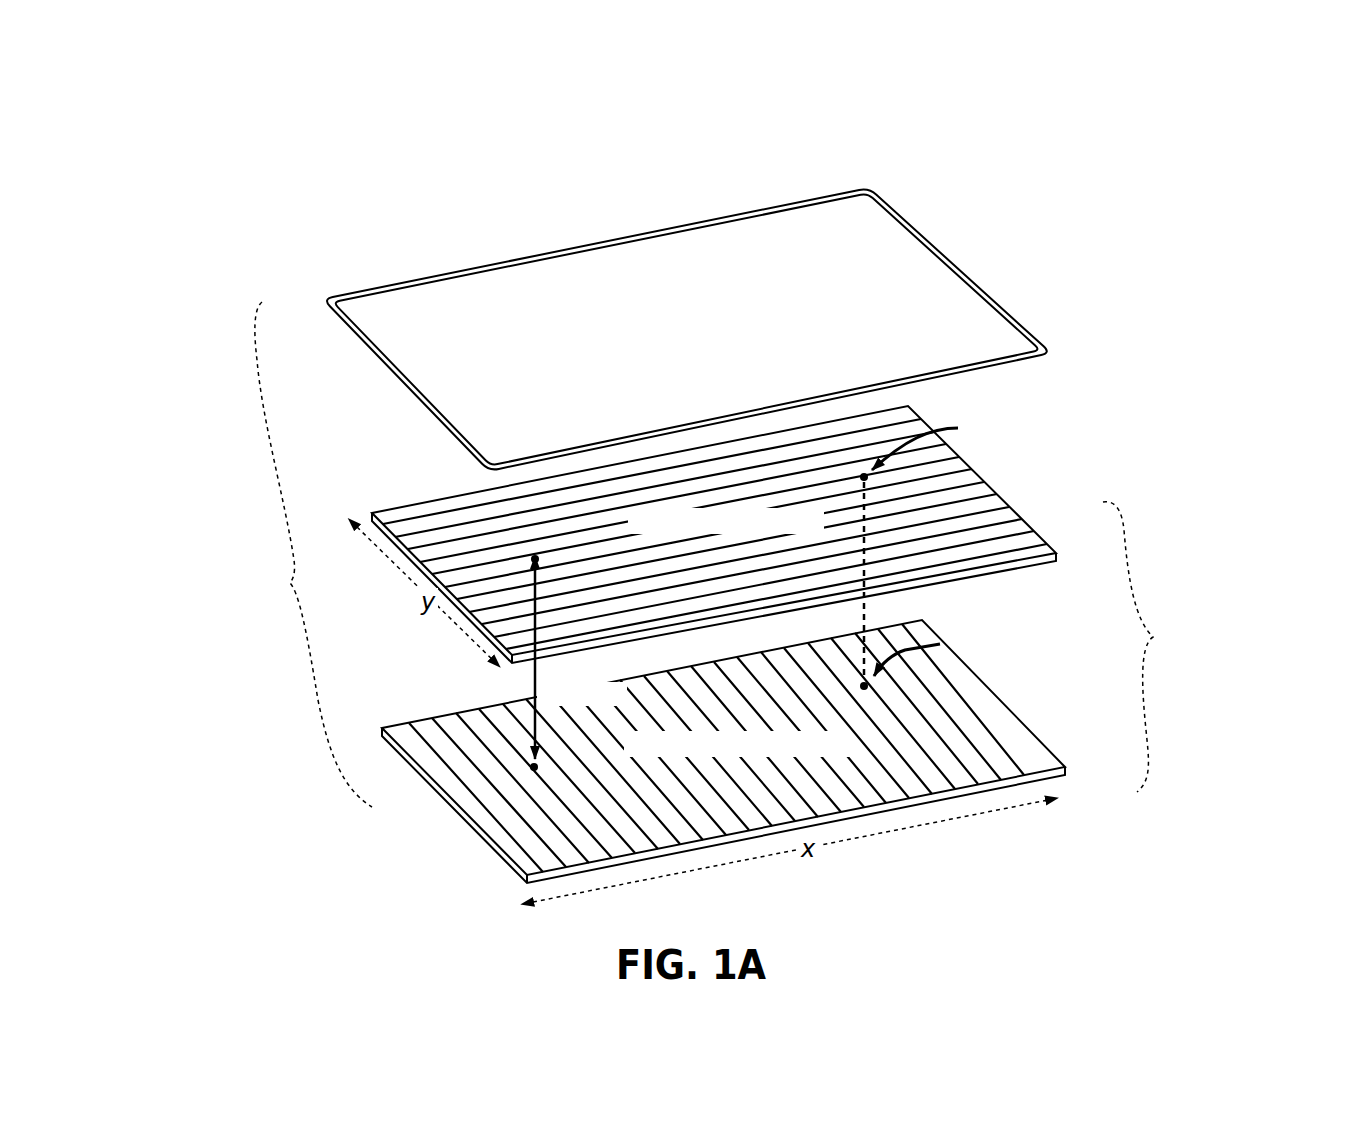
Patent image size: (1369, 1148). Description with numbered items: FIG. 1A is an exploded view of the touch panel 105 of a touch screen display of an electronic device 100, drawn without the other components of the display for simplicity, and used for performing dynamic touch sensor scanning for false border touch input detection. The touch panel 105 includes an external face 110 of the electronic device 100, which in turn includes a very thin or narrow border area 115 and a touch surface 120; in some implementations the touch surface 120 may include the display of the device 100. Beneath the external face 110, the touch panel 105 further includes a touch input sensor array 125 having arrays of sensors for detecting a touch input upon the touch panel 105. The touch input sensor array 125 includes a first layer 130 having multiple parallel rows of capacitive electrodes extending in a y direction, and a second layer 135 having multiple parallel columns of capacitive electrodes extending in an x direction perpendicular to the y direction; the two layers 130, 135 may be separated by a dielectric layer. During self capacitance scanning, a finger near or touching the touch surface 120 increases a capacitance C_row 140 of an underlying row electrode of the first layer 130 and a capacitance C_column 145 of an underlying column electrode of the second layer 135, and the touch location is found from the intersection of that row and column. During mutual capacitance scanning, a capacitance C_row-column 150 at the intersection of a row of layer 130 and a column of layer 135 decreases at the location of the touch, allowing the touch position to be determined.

The electronic device 100 is at (148, 252).
The touch panel 105 is at (249, 554).
The external face 110 is at (952, 252).
The border area 115 is at (437, 274).
The touch surface 120 is at (567, 328).
The touch input sensor array 125 is at (1223, 647).
The first layer 130 is at (993, 483).
The second layer 135 is at (1013, 708).
The capacitance C_row 140 is at (1018, 413).
The capacitance C_column 145 is at (1000, 632).
The capacitance C_row-column 150 is at (510, 686).